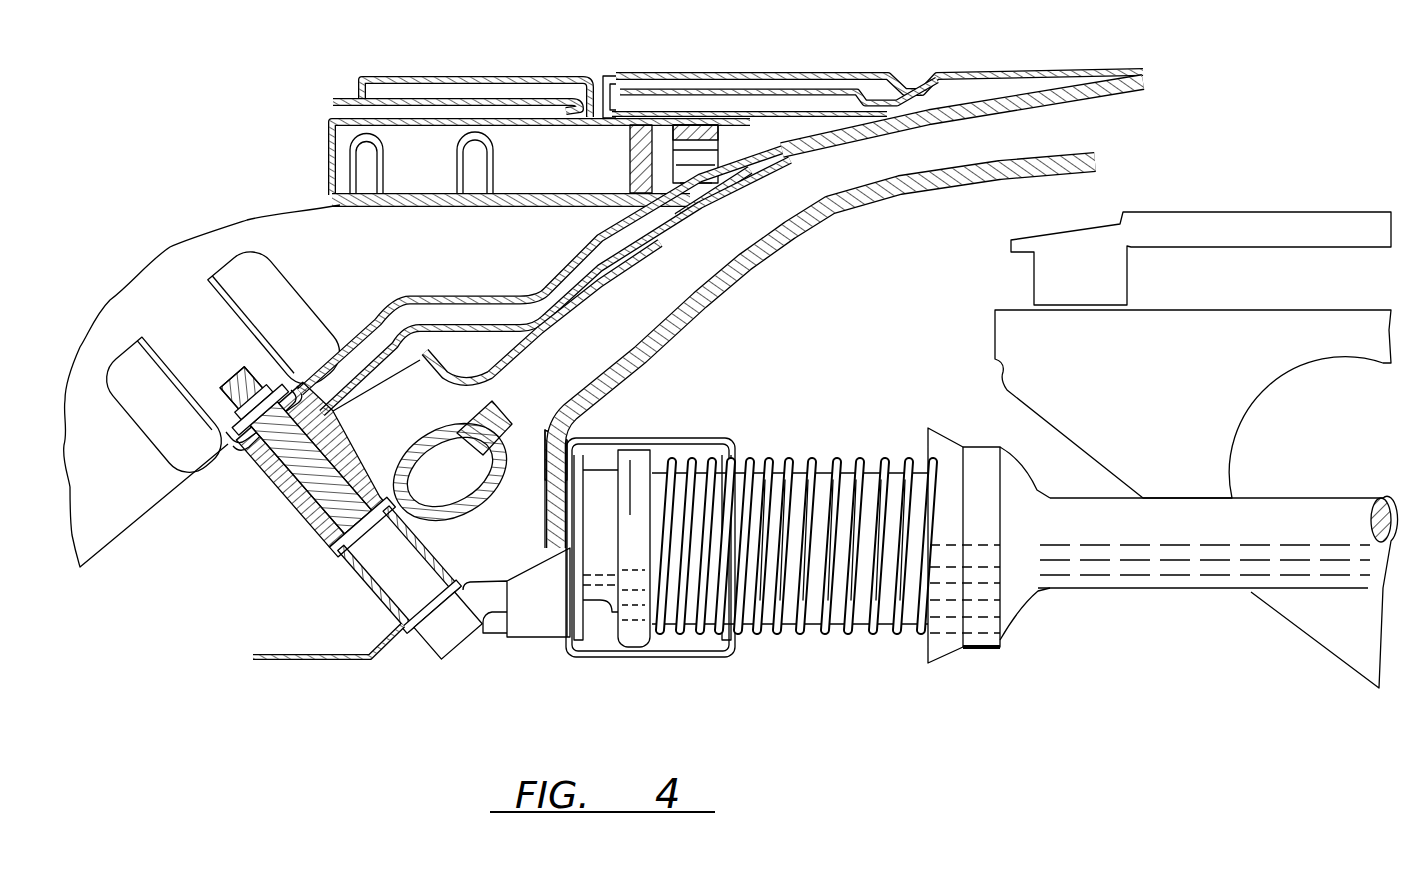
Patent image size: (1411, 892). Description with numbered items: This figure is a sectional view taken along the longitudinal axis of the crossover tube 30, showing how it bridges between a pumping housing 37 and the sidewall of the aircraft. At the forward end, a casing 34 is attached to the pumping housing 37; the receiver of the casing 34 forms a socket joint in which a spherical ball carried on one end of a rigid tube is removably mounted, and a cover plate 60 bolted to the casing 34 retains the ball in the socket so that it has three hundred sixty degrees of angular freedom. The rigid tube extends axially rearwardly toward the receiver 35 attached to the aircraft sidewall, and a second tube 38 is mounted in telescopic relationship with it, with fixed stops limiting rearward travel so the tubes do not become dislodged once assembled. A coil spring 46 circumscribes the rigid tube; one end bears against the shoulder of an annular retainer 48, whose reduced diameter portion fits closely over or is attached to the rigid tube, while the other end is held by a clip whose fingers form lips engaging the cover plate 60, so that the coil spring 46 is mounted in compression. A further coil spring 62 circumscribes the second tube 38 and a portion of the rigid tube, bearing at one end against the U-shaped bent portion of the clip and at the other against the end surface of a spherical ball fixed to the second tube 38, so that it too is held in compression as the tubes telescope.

The crossover tube 30 is at (779, 408).
The casing 34 is at (530, 622).
The receiver 35 is at (990, 647).
The pumping housing 37 is at (467, 352).
The second tube 38 is at (792, 545).
The coil spring 46 is at (703, 653).
The annular retainer 48 is at (637, 653).
The cover plate 60 is at (576, 446).
The coil spring 62 is at (823, 633).